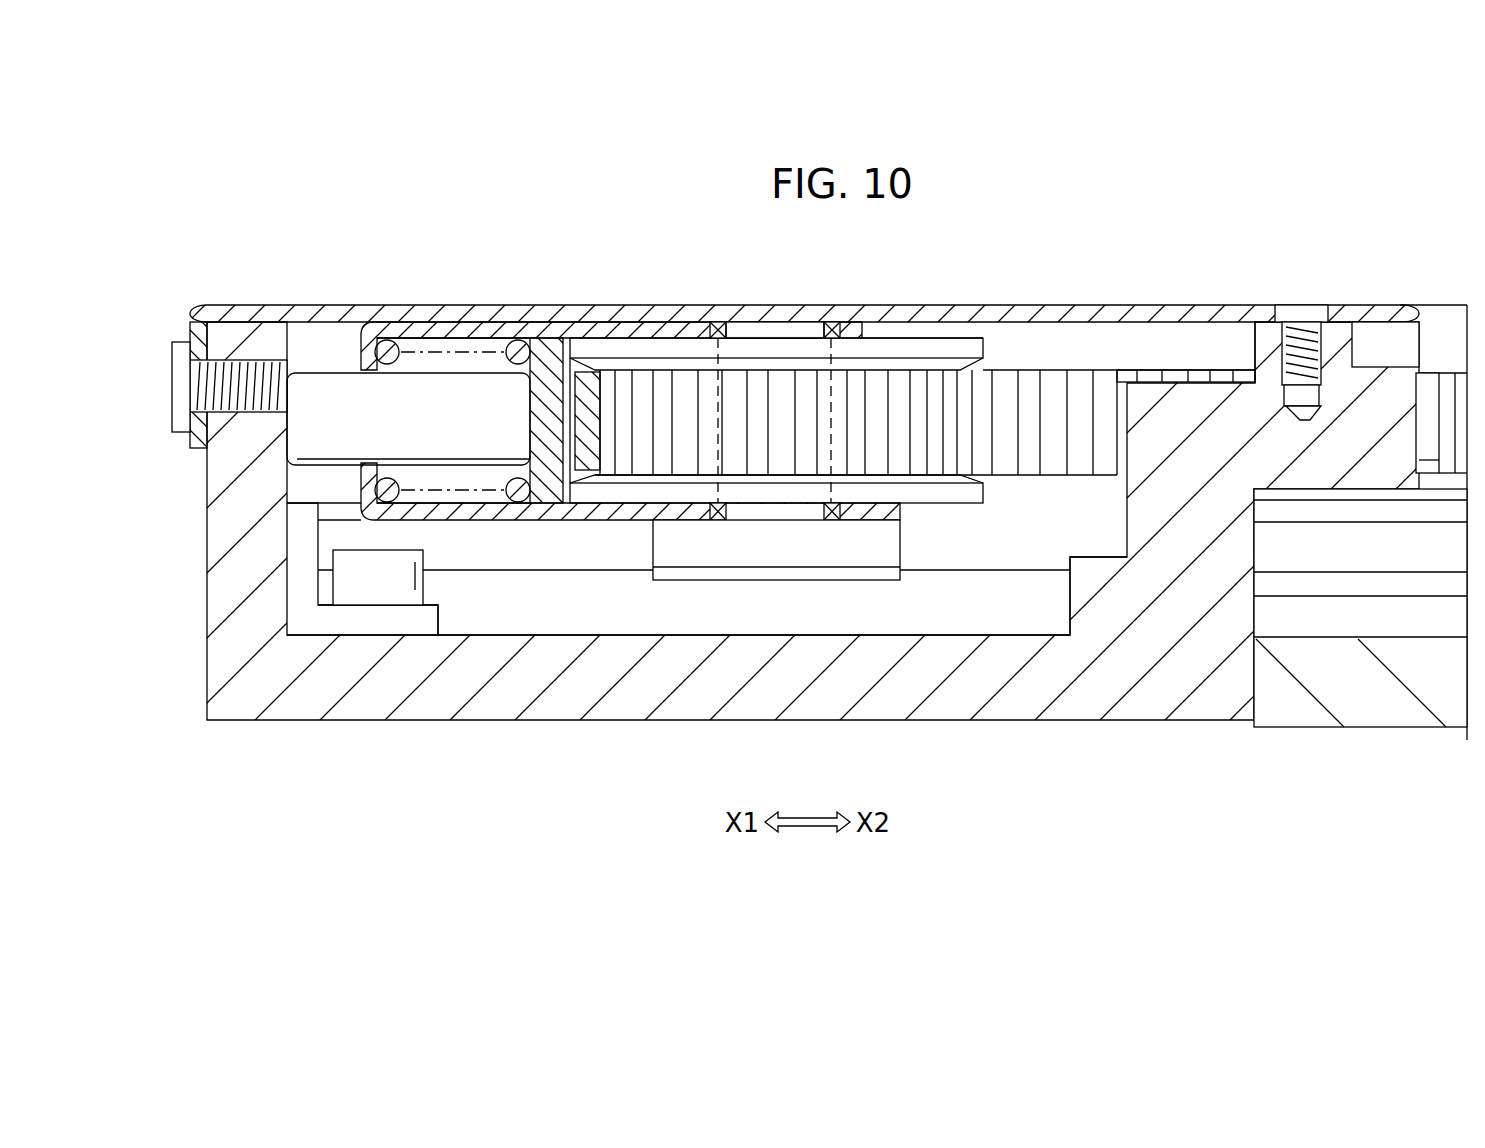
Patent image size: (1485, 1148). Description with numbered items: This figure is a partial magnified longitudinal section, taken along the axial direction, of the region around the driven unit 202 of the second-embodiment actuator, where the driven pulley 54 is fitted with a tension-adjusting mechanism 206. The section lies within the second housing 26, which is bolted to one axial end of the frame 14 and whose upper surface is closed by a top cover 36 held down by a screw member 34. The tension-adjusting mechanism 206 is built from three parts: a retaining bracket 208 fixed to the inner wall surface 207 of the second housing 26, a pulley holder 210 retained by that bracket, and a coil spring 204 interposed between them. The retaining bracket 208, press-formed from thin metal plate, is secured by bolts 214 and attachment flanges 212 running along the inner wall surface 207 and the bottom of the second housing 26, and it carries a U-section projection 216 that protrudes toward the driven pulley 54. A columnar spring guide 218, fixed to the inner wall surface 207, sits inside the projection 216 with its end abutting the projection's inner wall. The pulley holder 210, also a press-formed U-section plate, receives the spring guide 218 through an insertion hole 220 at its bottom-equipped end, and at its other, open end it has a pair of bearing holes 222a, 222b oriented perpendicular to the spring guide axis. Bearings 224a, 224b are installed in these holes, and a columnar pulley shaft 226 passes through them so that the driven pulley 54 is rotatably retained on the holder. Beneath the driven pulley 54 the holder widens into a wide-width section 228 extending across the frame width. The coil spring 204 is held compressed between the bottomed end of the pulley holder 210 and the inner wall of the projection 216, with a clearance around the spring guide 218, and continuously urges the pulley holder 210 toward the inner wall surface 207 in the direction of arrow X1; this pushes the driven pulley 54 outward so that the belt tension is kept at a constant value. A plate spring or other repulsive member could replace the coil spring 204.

The frame 14 is at (1317, 684).
The second housing 26 is at (555, 692).
The screw member 34 is at (180, 385).
The top cover 36 is at (1120, 305).
The driven pulley 54 is at (985, 348).
The driven unit 202 is at (760, 618).
The coil spring 204 is at (382, 347).
The tension-adjusting mechanism 206 is at (918, 333).
The inner wall surface 207 is at (288, 548).
The retaining bracket 208 is at (358, 615).
The pulley holder 210 is at (580, 515).
The attachment flange 212 is at (410, 620).
The bolt 214 is at (402, 567).
The projection 216 is at (543, 345).
The spring guide 218 is at (339, 390).
The insertion hole 220 is at (372, 466).
The bearing hole 222a is at (718, 322).
The bearing hole 222b is at (718, 522).
The bearing 224a is at (835, 322).
The bearing 224b is at (835, 520).
The pulley shaft 226 is at (768, 330).
The wide-width section 228 is at (693, 572).